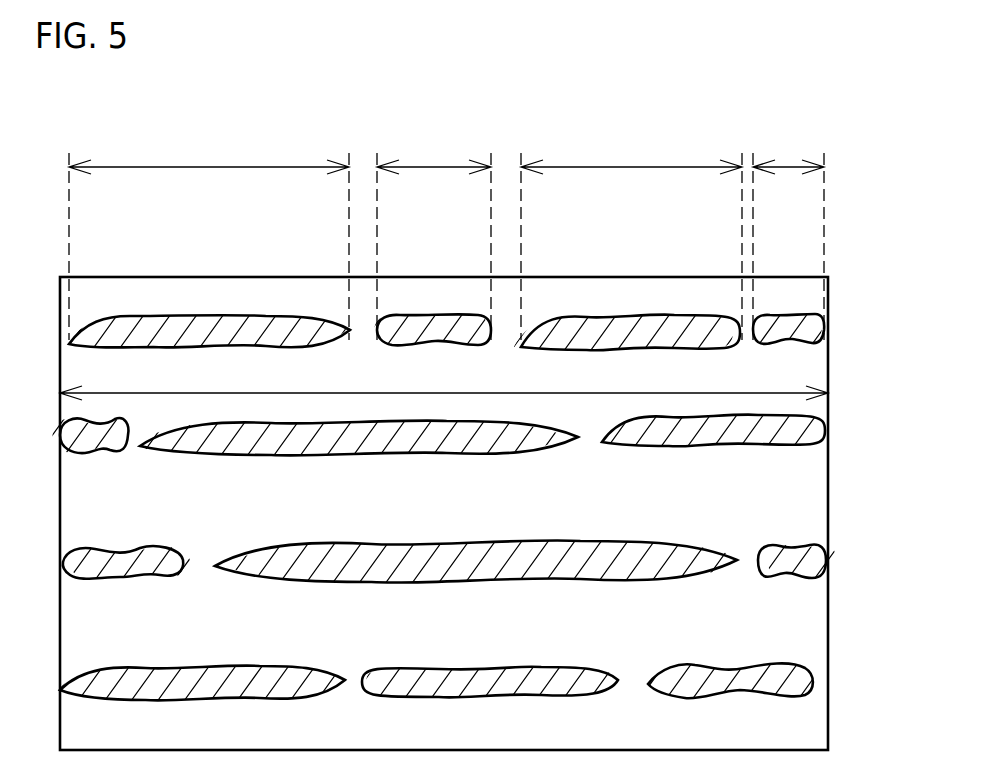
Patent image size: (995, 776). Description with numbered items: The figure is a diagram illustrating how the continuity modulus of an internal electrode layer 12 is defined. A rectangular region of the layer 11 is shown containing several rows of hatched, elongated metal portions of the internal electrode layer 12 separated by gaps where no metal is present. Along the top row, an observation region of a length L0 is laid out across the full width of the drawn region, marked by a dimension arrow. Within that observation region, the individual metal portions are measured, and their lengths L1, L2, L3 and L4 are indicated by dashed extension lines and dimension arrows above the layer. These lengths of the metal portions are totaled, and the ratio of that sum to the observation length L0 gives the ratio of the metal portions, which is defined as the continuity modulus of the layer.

The substrate / base sheet 11 is at (807, 495).
The internal electrode layer 12 is at (807, 330).
The length of the observation region L0 is at (444, 378).
The length of a metal portion L1 is at (209, 232).
The length of a metal portion L2 is at (434, 232).
The length of a metal portion L3 is at (631, 232).
The length of a metal portion L4 is at (788, 232).